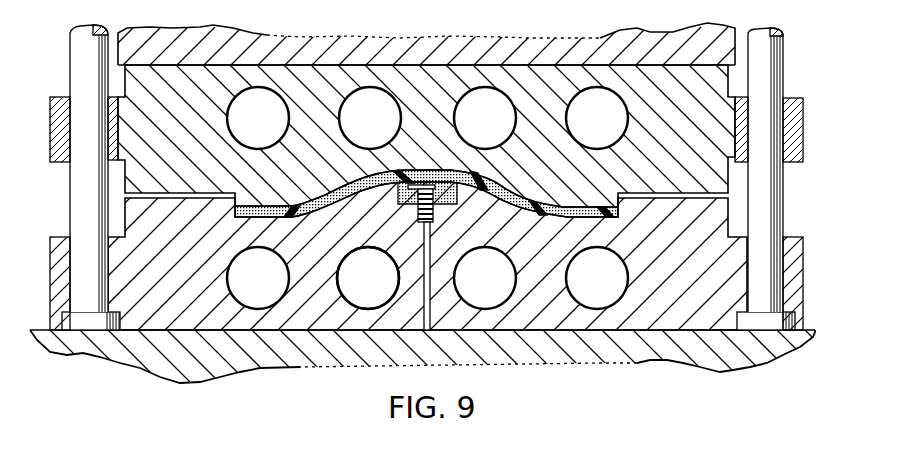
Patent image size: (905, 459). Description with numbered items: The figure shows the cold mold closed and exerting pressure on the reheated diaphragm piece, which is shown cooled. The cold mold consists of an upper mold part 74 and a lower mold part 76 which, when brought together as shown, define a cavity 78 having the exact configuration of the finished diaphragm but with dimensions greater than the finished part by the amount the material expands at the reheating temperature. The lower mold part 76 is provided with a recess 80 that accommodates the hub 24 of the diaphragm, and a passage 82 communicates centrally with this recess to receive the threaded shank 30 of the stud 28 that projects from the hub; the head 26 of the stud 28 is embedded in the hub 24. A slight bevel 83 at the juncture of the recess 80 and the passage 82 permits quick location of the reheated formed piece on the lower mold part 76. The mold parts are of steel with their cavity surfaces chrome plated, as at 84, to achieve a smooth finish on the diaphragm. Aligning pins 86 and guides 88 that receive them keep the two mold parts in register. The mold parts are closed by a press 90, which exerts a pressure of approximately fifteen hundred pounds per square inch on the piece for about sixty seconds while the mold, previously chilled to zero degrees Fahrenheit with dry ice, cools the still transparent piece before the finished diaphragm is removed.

The hub 24 is at (400, 212).
The head 26 is at (442, 180).
The stud 28 is at (407, 170).
The threaded shank 30 is at (447, 213).
The upper mold part 74 is at (293, 70).
The lower mold part 76 is at (63, 237).
The cavity 78 is at (500, 193).
The recess 80 is at (446, 188).
The passage 82 is at (423, 332).
The bevel 83 is at (368, 278).
The chrome plating 84 is at (298, 222).
The aligning pins 86 is at (765, 62).
The guides 88 is at (800, 99).
The press 90 is at (220, 43).